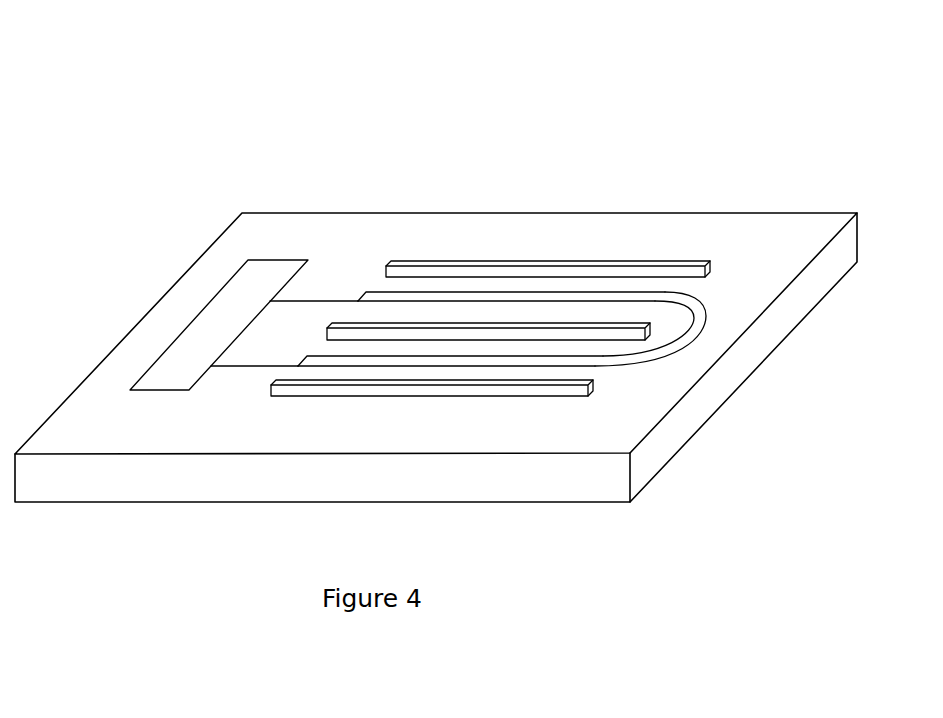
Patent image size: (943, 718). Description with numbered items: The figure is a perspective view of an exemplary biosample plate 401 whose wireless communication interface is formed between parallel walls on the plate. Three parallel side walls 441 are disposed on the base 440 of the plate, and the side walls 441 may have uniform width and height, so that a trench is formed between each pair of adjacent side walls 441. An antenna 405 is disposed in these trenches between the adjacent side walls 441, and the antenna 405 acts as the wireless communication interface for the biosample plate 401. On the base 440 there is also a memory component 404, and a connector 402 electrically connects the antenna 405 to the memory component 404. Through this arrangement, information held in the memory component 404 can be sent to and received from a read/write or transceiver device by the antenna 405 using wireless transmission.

The biosample plate 401 is at (289, 82).
The base 440 is at (598, 508).
The memory component 404 is at (212, 302).
The connector 402 is at (322, 299).
The antenna 405 is at (612, 292).
The parallel side walls 441 is at (428, 381).